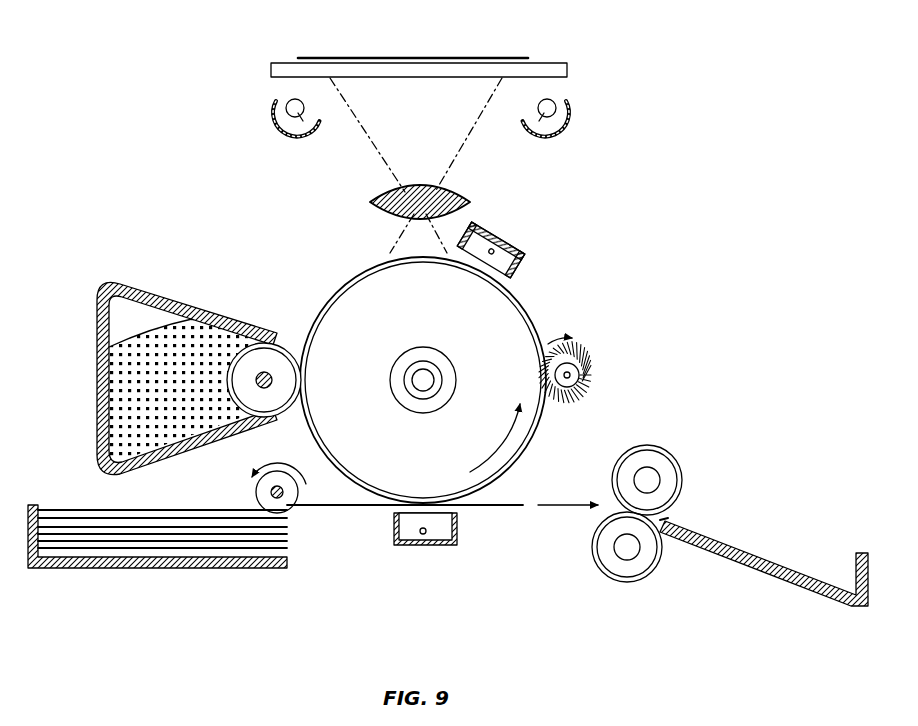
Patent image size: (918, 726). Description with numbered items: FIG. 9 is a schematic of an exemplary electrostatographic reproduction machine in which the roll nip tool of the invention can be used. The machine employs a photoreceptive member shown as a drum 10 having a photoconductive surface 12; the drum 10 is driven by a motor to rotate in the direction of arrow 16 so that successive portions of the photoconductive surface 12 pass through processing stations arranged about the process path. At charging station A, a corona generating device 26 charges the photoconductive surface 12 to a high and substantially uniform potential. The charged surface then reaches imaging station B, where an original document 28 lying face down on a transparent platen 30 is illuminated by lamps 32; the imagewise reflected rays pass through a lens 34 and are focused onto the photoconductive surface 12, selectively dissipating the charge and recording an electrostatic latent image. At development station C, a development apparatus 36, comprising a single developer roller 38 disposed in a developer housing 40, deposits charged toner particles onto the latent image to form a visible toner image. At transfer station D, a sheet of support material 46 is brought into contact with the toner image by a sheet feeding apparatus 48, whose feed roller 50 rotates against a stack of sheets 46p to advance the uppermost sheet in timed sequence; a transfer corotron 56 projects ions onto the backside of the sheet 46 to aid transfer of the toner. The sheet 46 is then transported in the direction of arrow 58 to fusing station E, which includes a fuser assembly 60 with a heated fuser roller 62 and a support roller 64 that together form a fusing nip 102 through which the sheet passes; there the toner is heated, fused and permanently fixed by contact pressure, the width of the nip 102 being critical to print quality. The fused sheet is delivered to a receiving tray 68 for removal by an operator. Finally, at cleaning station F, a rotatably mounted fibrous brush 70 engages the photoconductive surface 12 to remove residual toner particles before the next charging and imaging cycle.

The drum 10 is at (316, 374).
The photoconductive surface 12 is at (313, 325).
The arrow 16 is at (502, 443).
The corona generating device 26 is at (514, 234).
The original document 28 is at (370, 57).
The transparent platen 30 is at (271, 72).
The lamps 32 is at (277, 128).
The lens 34 is at (413, 192).
The development apparatus 36 is at (183, 351).
The developer roller 38 is at (280, 397).
The developer housing 40 is at (97, 412).
The sheet of support material 46 is at (357, 508).
The stack of sheets 46p is at (107, 512).
The sheet feeding apparatus 48 is at (167, 568).
The feed roller 50 is at (256, 493).
The transfer corotron 56 is at (427, 547).
The arrow 58 is at (571, 507).
The fuser assembly 60 is at (664, 537).
The heated fuser roller 62 is at (683, 475).
The support roller 64 is at (625, 578).
The receiving tray 68 is at (752, 552).
The fibrous brush 70 is at (562, 393).
The fusing nip 102 is at (663, 520).
The charging station A is at (452, 247).
The imaging station B is at (385, 247).
The development station C is at (297, 340).
The transfer station D is at (467, 510).
The fusing station E is at (606, 495).
The cleaning station F is at (531, 363).